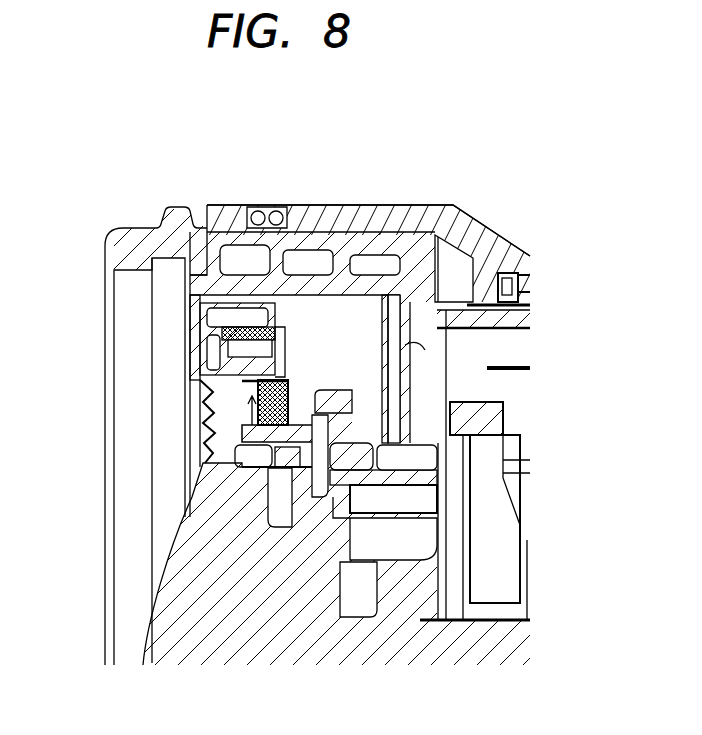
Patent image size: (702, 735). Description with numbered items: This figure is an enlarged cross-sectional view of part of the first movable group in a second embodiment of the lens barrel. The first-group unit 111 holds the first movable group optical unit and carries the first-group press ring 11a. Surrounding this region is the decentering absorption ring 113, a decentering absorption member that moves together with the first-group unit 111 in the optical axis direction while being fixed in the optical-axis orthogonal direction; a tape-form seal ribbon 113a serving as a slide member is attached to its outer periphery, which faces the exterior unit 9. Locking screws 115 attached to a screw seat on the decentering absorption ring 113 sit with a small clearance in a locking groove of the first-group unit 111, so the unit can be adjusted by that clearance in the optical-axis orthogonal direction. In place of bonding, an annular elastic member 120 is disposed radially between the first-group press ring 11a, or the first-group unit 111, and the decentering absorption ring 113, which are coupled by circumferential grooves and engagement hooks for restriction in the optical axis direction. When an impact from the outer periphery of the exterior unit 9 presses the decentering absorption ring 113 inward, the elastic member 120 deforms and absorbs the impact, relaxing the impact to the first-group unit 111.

The exterior unit 9 is at (150, 228).
The decentering absorption ring 113 is at (218, 272).
The seal ribbon 113a is at (320, 230).
The locking screw 115 is at (197, 340).
The first-group press ring 11a is at (197, 434).
The first-group unit 111 is at (162, 553).
The elastic member 120 is at (357, 405).